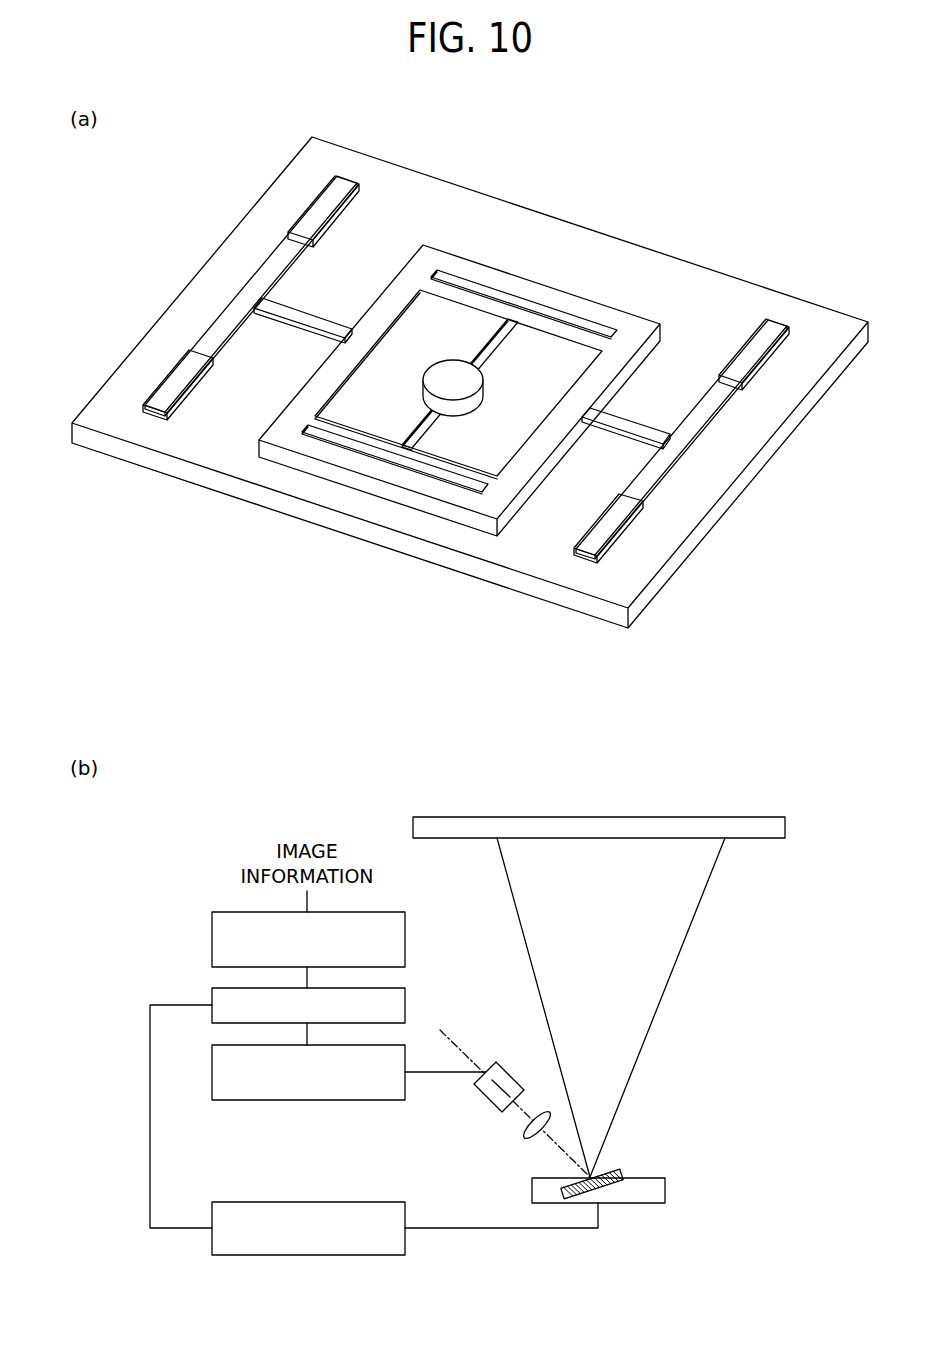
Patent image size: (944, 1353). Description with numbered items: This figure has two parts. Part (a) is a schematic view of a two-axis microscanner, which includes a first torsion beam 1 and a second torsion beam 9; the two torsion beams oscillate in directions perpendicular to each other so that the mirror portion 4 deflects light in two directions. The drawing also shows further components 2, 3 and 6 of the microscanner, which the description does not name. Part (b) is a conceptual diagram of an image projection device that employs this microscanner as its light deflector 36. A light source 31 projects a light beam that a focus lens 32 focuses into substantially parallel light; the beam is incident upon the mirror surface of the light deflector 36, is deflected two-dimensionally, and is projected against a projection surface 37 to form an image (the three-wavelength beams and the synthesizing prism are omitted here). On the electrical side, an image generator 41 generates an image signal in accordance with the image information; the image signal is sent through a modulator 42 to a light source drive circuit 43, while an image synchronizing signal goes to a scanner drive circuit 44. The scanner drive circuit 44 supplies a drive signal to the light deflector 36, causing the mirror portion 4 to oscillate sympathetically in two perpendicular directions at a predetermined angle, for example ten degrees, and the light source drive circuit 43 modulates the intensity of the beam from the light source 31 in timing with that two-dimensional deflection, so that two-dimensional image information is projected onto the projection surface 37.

The first torsion beam 1 is at (418, 423).
The drive beam (cantilever actuator) 2 is at (612, 570).
The piezoelectric element 3 is at (603, 523).
The mirror portion 4 is at (450, 366).
The base plate 6 is at (205, 457).
The second torsion beam 9 is at (307, 313).
The light source 31 is at (488, 1100).
The focus lens 32 is at (527, 1135).
The light deflector 36 is at (665, 1180).
The projection surface 37 is at (757, 817).
The image generator 41 is at (212, 923).
The modulator 42 is at (212, 998).
The light source drive circuit 43 is at (212, 1056).
The scanner drive circuit 44 is at (212, 1208).